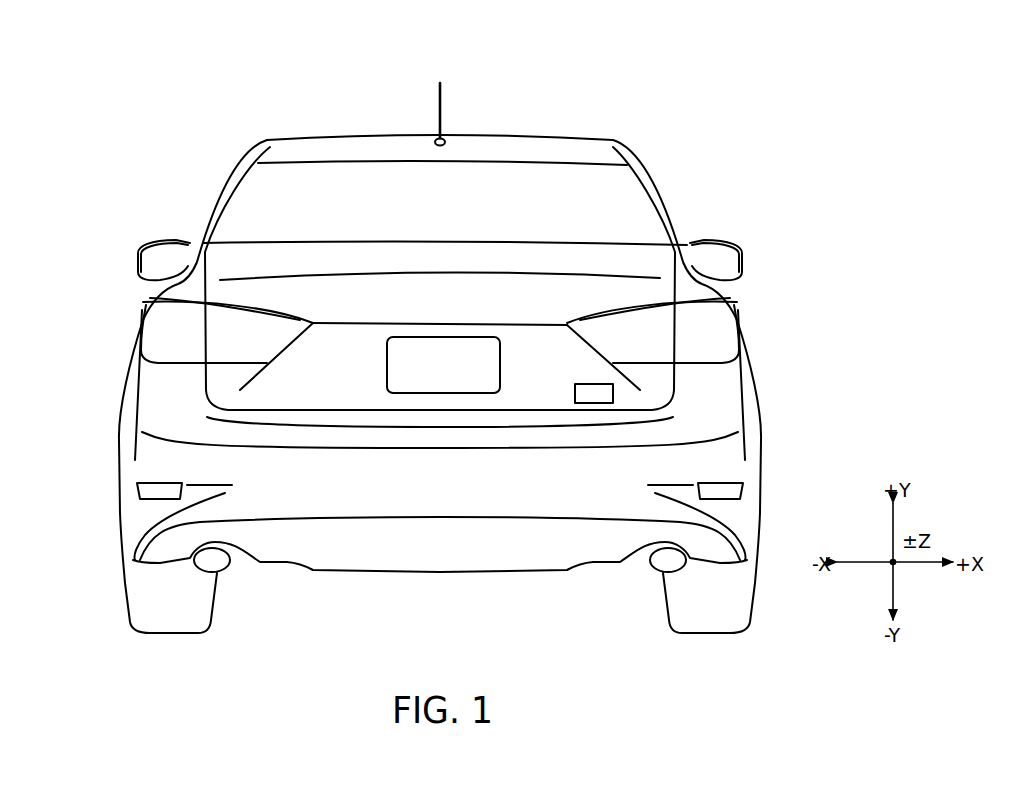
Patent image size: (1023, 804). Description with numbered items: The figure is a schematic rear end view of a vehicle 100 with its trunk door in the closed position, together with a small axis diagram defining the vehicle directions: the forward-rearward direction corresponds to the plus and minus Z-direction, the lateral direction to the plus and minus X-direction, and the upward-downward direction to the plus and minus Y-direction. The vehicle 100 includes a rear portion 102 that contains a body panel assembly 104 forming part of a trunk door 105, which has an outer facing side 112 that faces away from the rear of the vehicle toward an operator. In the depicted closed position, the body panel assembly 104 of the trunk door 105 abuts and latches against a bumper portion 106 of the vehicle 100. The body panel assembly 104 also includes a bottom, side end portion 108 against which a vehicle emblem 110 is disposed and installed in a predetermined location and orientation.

The vehicle 100 is at (718, 125).
The rear portion 102 is at (777, 255).
The body panel assembly 104 is at (472, 310).
The trunk door 105 is at (670, 338).
The bumper portion 106 is at (410, 503).
The bottom, side end portion 108 is at (717, 432).
The vehicle emblem 110 is at (598, 406).
The outer facing side 112 is at (663, 382).